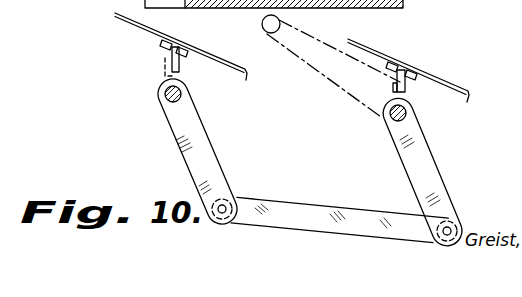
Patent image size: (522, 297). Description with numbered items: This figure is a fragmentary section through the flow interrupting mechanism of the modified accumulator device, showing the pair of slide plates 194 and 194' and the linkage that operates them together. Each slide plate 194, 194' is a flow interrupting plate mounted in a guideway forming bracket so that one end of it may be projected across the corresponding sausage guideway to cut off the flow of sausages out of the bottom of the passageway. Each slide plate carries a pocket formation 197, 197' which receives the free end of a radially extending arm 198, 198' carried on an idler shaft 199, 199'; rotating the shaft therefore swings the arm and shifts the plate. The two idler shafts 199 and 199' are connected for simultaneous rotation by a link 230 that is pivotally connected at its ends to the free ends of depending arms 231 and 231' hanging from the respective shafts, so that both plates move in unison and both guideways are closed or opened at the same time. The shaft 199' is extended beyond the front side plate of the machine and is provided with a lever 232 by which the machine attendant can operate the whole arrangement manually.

The slide plate 194 is at (189, 46).
The pocket formation 197 is at (191, 36).
The radially extending arm 198 is at (199, 71).
The idler shaft 199 is at (153, 106).
The depending arm 231 is at (216, 151).
The link 230 is at (300, 227).
The lever 232 is at (322, 72).
The slide plate 194' is at (425, 70).
The pocket formation 197' is at (421, 57).
The radially extending arm 198' is at (432, 96).
The idler shaft 199' is at (378, 125).
The depending arm 231' is at (443, 171).